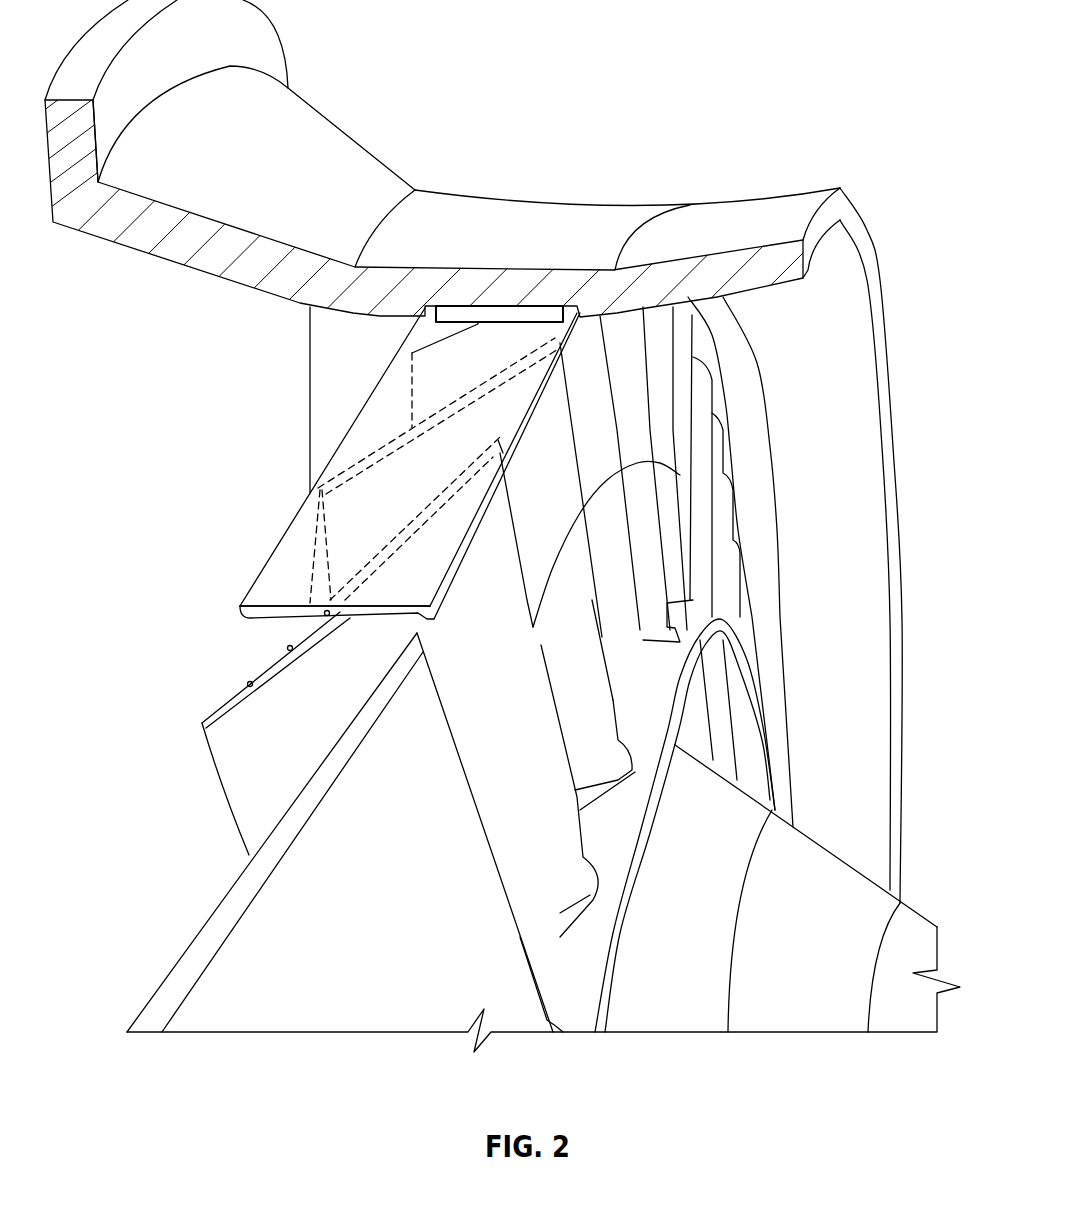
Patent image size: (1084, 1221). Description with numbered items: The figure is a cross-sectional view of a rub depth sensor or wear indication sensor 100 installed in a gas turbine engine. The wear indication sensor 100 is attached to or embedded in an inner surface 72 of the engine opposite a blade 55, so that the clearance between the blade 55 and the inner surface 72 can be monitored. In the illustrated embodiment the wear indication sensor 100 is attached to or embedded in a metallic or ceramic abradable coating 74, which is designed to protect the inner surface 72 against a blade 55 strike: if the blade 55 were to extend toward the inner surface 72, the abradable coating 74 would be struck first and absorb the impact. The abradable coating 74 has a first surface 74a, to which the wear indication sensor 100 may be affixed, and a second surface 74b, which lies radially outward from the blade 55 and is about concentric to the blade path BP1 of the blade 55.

The wear indication sensor 100 is at (528, 306).
The inner surface 72 is at (360, 332).
The abradable coating 74 is at (300, 518).
The first surface 74a is at (240, 604).
The second surface 74b is at (266, 628).
The blade path BP1 is at (592, 487).
The blade 55 is at (296, 761).